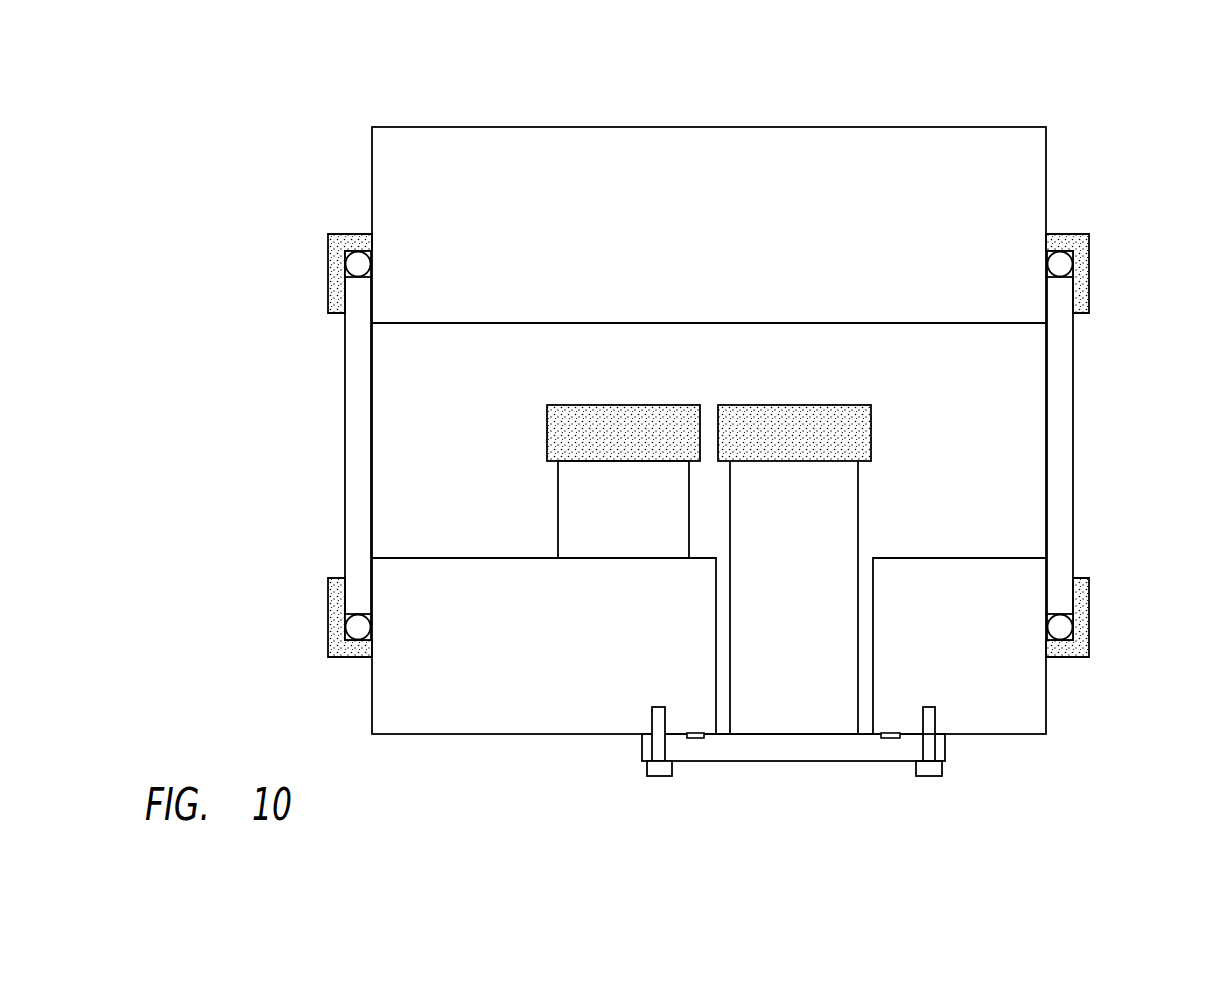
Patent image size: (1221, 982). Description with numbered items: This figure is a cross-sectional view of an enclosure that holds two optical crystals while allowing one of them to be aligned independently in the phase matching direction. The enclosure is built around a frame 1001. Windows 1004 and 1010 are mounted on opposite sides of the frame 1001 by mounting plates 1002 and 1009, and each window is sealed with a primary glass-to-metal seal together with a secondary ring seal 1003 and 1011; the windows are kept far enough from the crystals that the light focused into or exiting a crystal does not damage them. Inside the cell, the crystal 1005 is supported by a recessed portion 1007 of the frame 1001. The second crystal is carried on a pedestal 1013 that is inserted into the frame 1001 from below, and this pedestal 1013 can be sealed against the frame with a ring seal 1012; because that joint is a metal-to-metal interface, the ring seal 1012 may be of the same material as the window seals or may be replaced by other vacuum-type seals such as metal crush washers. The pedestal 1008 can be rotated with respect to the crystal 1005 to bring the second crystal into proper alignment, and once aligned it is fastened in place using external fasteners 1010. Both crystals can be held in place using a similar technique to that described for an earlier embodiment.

The frame 1001 is at (749, 158).
The mounting plate 1002 is at (328, 270).
The secondary ring seal 1003 is at (328, 622).
The window 1004 is at (344, 444).
The crystal 1005 is at (618, 422).
The recessed portion 1007 is at (574, 519).
The pedestal 1008 is at (795, 750).
The mounting plate 1009 is at (1089, 262).
The window; external fasteners 1010 is at (1073, 380).
The secondary ring seal 1011 is at (1089, 618).
The ring seal 1012 is at (696, 738).
The pedestal 1013 is at (821, 650).